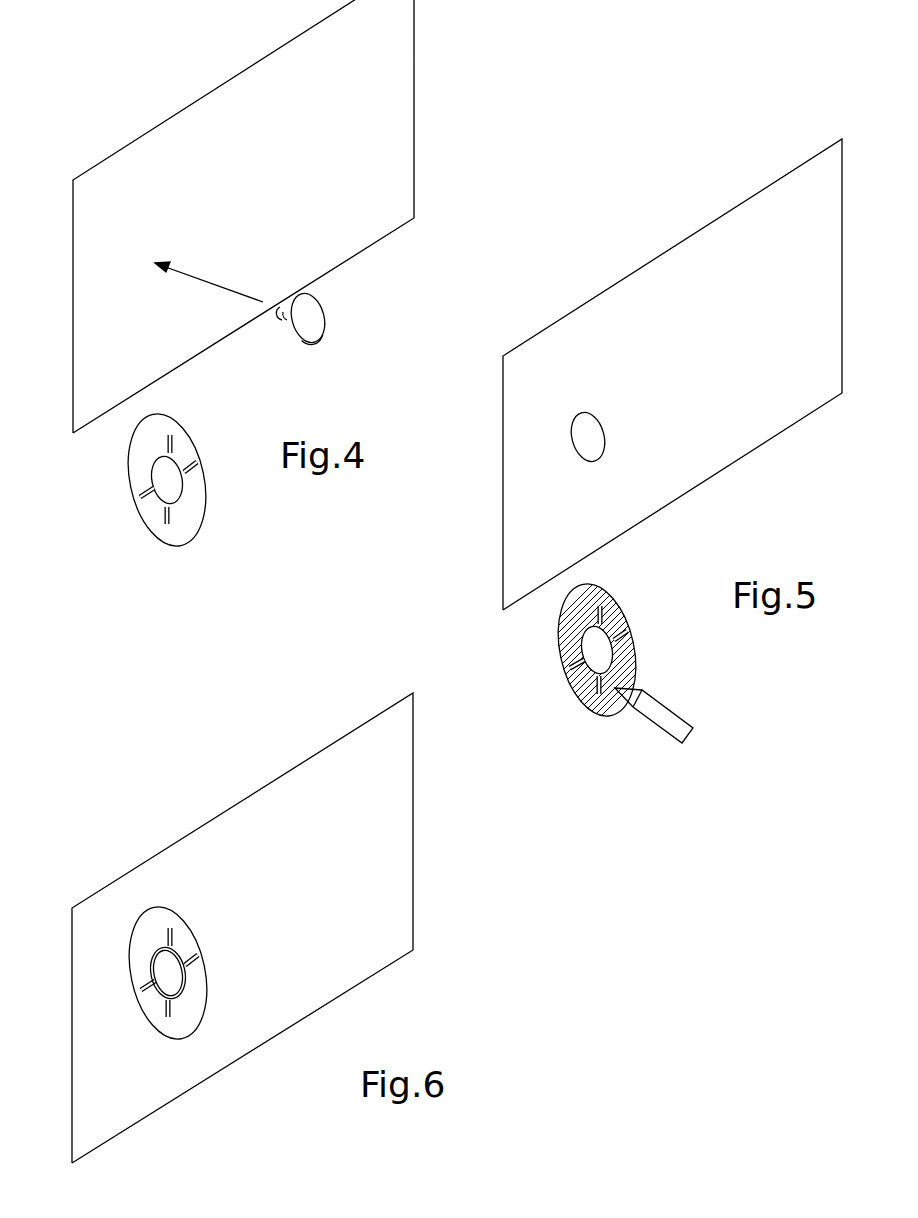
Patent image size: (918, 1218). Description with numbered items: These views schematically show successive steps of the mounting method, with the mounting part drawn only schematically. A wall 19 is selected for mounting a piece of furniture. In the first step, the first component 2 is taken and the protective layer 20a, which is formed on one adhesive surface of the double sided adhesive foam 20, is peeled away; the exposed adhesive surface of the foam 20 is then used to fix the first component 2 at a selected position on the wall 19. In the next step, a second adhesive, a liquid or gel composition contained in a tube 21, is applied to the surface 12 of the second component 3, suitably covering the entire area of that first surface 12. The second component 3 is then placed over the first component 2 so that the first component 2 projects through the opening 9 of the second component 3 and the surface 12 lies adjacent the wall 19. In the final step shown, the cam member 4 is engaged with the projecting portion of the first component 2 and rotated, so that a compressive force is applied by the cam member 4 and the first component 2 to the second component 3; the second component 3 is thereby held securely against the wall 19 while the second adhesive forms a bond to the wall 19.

In FIG. 4, the wall 19 is at (414, 48).
In FIG. 5, the wall 19 is at (782, 177).
In FIG. 6, the wall 19 is at (233, 806).
In FIG. 4, the first component 2 is at (324, 315).
In FIG. 5, the first component 2 is at (605, 435).
In FIG. 6, the first component 2 is at (155, 970).
In FIG. 4, the second component 3 is at (183, 523).
In FIG. 5, the second component 3 is at (597, 650).
In FIG. 6, the second component 3 is at (158, 1040).
In FIG. 4, the double sided adhesive foam 20 is at (302, 345).
In FIG. 4, the protective layer 20a is at (282, 312).
In FIG. 5, the opening 9 is at (597, 650).
In FIG. 5, the surface 12 is at (613, 602).
In FIG. 5, the tube 21 is at (677, 718).
In FIG. 6, the cam member 4 is at (180, 987).